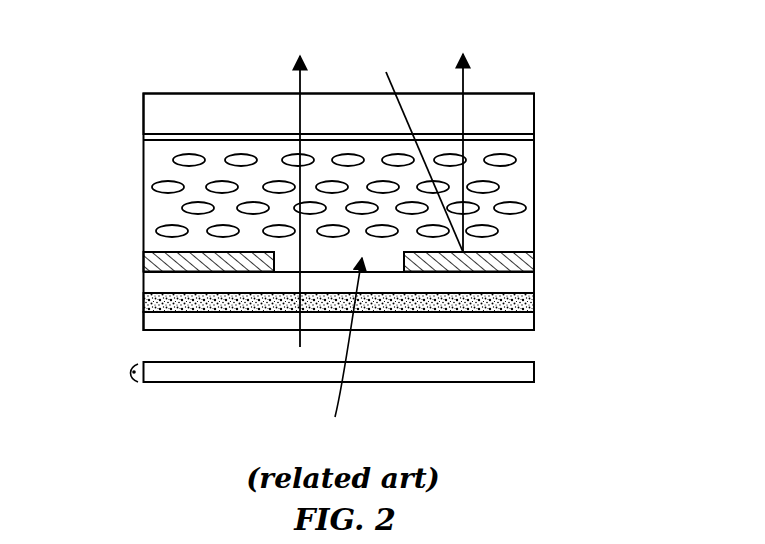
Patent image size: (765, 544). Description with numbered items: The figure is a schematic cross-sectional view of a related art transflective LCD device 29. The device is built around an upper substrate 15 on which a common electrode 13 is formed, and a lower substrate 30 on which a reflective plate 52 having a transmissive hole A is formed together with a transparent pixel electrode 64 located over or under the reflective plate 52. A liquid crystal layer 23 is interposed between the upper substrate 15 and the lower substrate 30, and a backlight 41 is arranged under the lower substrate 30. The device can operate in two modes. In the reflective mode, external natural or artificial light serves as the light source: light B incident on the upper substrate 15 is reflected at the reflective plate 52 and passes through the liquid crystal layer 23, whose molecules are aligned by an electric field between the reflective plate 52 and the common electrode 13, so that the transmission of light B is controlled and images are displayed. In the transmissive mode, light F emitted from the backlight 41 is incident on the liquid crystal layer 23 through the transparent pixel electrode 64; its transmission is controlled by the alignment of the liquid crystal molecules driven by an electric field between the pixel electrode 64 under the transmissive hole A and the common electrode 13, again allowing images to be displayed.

The related art transflective LCD device 29 is at (124, 92).
The upper substrate 15 is at (527, 115).
The common electrode 13 is at (527, 139).
The liquid crystal layer 23 is at (503, 161).
The reflective plate 52 is at (527, 253).
The transparent pixel electrode 64 is at (524, 300).
The lower substrate 30 is at (524, 323).
The backlight 41 is at (524, 372).
The light from the backlight F is at (300, 75).
The light incident on the upper substrate B is at (390, 80).
The transmissive hole A is at (345, 350).